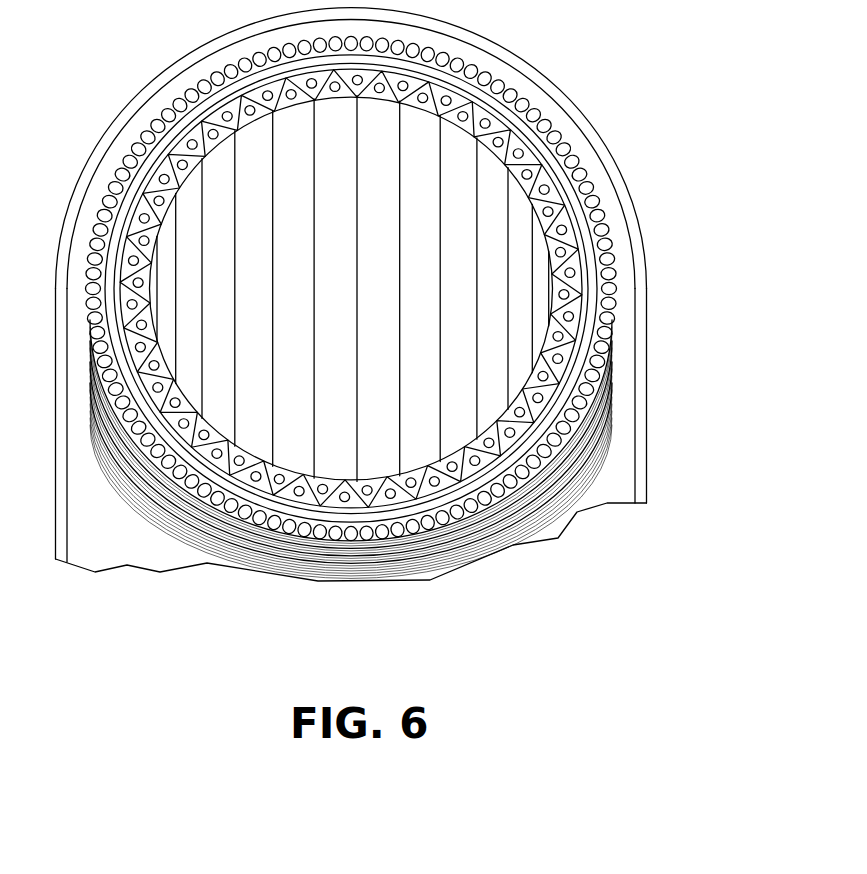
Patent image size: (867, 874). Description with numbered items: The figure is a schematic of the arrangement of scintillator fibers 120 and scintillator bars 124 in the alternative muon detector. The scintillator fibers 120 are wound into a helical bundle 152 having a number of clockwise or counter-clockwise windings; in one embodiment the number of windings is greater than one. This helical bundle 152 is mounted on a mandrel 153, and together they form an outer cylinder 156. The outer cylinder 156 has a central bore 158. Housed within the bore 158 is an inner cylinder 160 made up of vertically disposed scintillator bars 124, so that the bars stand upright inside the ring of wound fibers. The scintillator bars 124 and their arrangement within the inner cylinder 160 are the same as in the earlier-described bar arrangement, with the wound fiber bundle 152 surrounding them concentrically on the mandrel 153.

The scintillator fibers 120 is at (610, 275).
The scintillator bars 124 is at (570, 240).
The helical bundle 152 is at (632, 305).
The mandrel 153 is at (568, 187).
The outer cylinder 156 is at (630, 350).
The bore 158 is at (483, 480).
The inner cylinder 160 is at (402, 500).